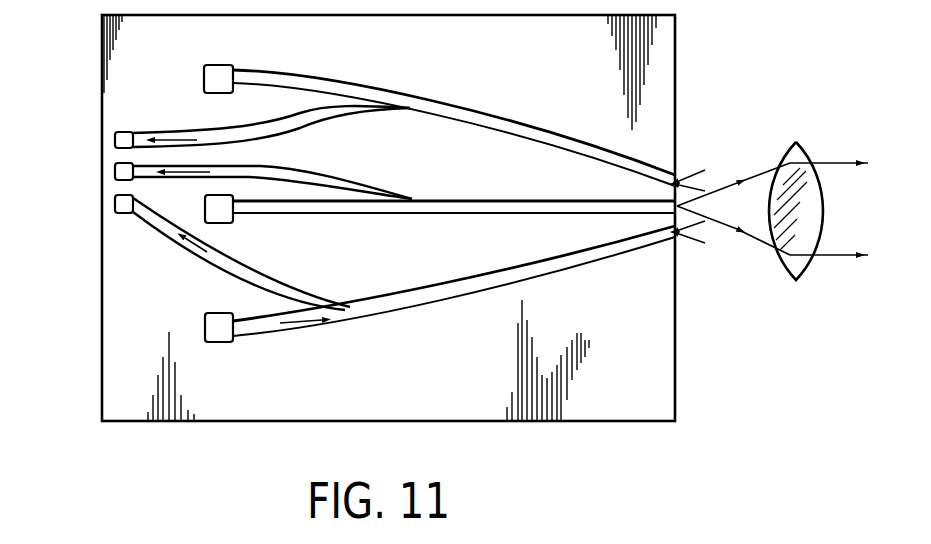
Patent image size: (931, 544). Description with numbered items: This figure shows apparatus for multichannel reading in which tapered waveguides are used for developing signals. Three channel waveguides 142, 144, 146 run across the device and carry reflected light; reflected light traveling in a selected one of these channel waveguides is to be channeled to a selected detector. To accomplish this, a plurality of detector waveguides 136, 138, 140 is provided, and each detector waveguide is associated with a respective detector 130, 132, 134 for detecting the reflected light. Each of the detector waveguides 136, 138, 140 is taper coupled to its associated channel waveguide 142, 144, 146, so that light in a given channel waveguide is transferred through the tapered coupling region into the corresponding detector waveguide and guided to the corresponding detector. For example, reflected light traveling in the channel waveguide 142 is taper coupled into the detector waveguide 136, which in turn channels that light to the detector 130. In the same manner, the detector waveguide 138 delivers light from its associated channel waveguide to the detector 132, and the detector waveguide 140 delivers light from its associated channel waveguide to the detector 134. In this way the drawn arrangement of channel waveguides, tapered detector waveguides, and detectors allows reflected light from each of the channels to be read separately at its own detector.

The detector 130 is at (115, 140).
The detector 132 is at (115, 172).
The detector 134 is at (115, 204).
The detector waveguide 136 is at (278, 128).
The detector waveguide 138 is at (290, 171).
The detector waveguide 140 is at (218, 272).
The channel waveguide 142 is at (345, 80).
The channel waveguide 144 is at (463, 200).
The channel waveguide 146 is at (380, 320).